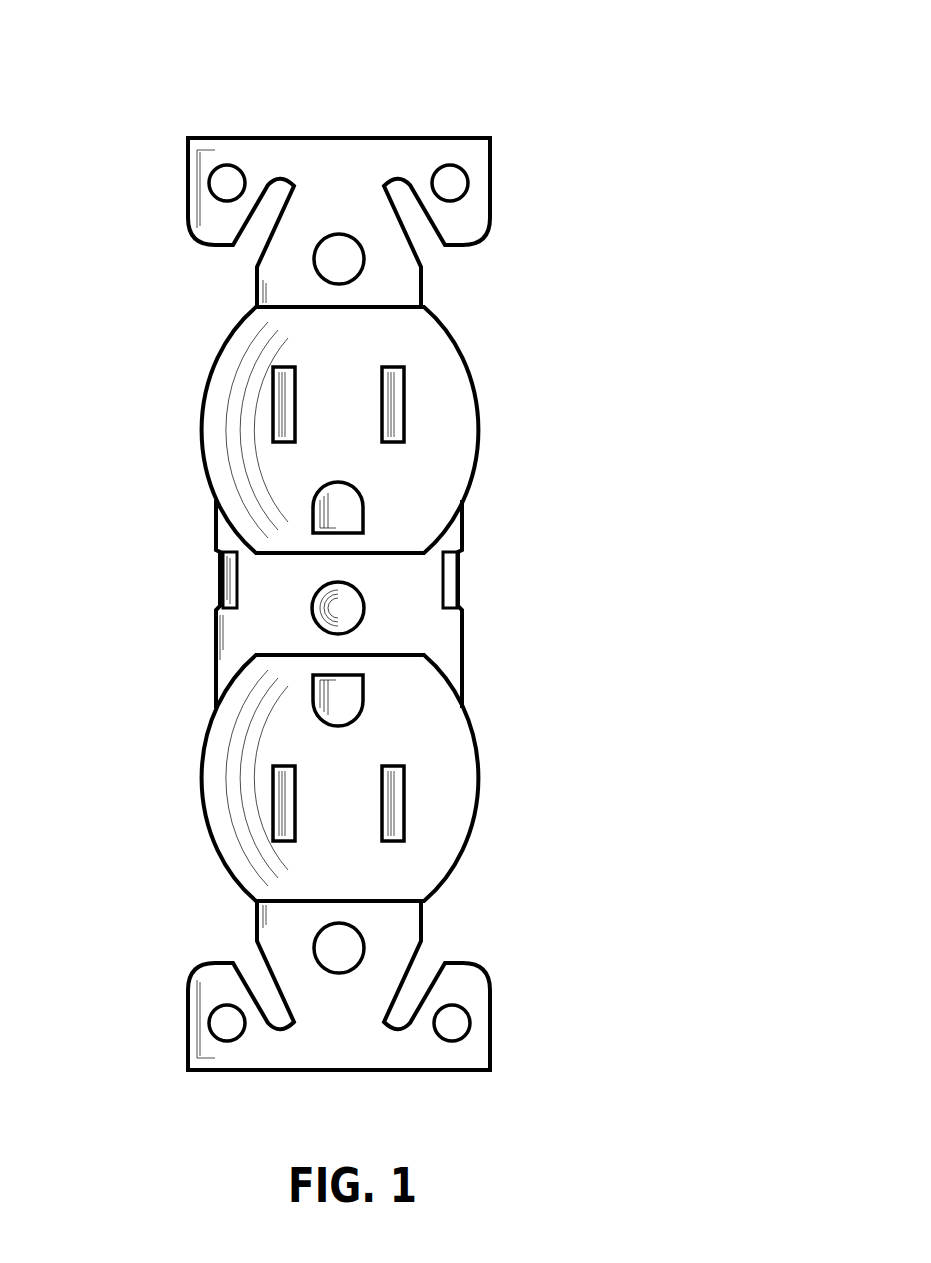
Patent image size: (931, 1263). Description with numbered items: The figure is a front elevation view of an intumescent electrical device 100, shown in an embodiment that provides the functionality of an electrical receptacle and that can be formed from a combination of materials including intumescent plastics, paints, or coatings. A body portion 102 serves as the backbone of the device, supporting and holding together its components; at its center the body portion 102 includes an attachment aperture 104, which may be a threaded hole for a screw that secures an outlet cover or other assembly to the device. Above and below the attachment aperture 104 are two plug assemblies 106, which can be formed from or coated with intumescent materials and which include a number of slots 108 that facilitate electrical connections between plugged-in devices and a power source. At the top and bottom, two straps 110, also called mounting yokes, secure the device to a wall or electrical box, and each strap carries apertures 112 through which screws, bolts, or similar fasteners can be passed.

The intumescent electrical device 100 is at (728, 72).
The body portion 102 is at (466, 633).
The attachment aperture 104 is at (347, 612).
The plug assemblies 106 is at (480, 385).
The slots 108 is at (318, 503).
The straps 110 is at (490, 218).
The apertures 112 is at (340, 257).